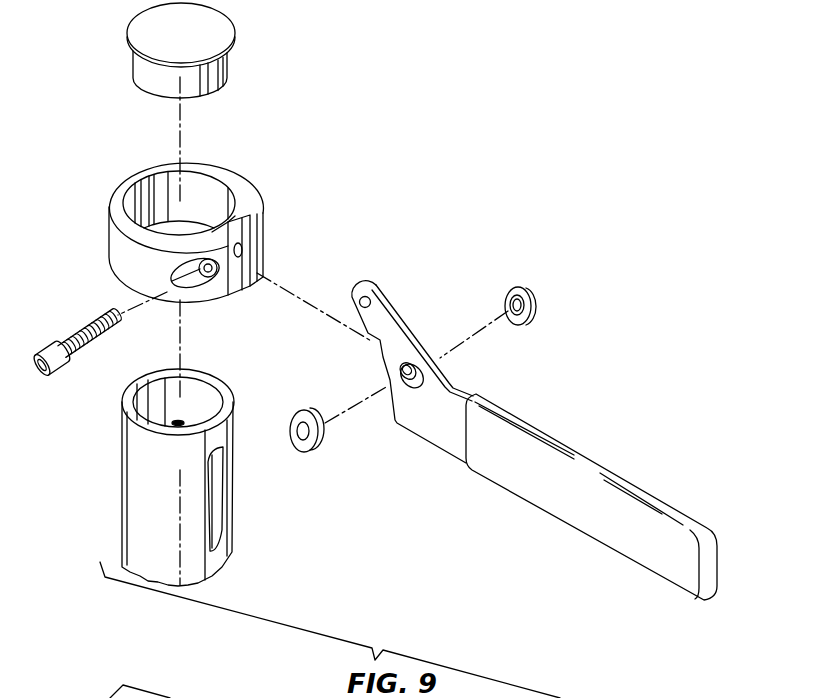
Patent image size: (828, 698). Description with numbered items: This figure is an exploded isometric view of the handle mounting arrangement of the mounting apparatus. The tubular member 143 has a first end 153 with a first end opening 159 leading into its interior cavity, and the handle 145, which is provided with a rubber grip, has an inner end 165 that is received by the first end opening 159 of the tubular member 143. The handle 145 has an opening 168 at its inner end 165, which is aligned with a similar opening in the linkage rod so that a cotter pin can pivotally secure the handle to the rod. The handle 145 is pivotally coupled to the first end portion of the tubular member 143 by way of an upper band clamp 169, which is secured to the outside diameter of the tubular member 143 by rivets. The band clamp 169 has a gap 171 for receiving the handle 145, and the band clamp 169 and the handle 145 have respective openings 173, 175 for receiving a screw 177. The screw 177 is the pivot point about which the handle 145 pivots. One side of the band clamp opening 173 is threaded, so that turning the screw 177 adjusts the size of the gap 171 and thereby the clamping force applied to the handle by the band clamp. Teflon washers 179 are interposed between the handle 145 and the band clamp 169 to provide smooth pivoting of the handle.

The tubular member 143 is at (122, 500).
The handle 145 is at (638, 491).
The first end 153 is at (128, 400).
The first end opening 159 is at (222, 528).
The inner end 165 is at (377, 284).
The handle opening 168 is at (371, 303).
The upper band clamp 169 is at (253, 197).
The gap 171 is at (242, 249).
The band clamp opening 173 is at (210, 272).
The handle opening 175 is at (410, 387).
The screw 177 is at (84, 333).
The washers 179 is at (312, 452).